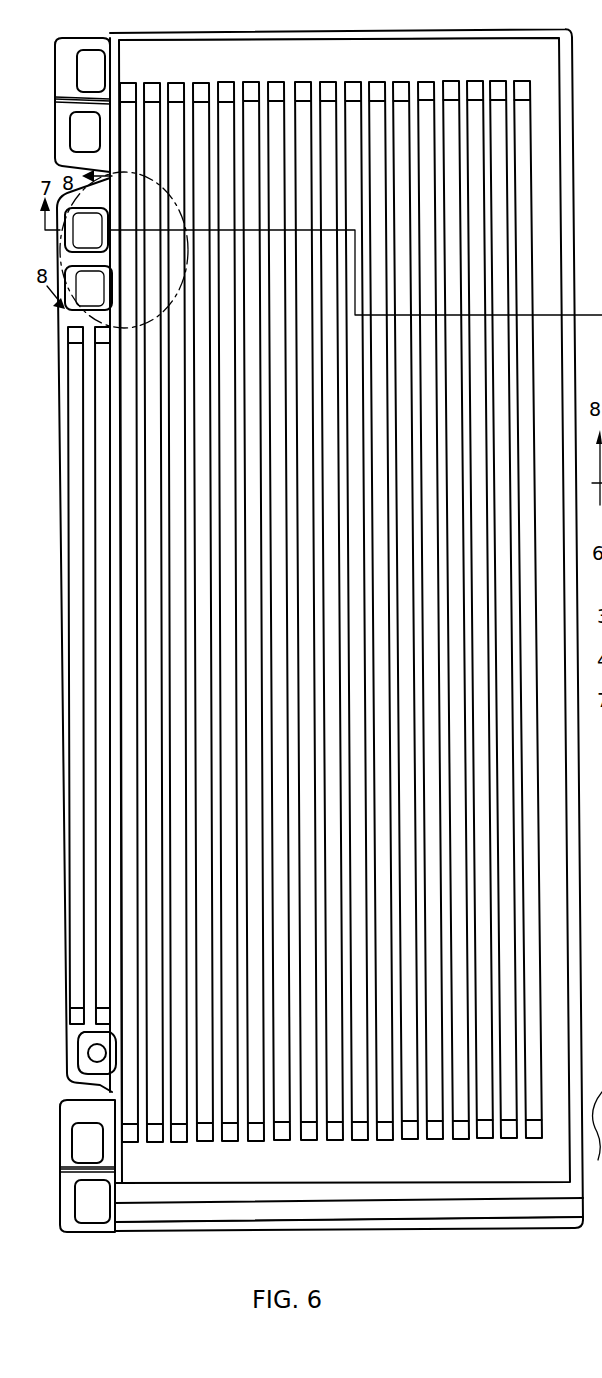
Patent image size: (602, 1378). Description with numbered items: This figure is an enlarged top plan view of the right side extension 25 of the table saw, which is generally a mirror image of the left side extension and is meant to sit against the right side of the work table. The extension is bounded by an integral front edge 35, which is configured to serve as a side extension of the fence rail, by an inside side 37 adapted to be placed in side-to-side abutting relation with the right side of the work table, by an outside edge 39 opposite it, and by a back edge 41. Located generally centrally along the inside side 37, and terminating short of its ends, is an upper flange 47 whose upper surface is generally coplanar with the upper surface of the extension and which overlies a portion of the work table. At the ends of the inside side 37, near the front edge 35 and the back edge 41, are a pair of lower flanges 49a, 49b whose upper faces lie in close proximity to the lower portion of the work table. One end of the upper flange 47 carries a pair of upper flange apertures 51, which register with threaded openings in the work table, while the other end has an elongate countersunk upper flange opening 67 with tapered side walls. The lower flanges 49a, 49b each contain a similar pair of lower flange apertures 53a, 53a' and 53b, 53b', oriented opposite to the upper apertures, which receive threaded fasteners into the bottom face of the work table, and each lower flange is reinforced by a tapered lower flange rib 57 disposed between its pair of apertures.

The right side extension 25 is at (575, 167).
The front edge 35 is at (384, 1242).
The inside side 37 is at (58, 636).
The outside edge 39 is at (597, 226).
The back edge 41 is at (373, 25).
The upper flange 47 is at (62, 1042).
The lower flange 49a is at (65, 1233).
The lower flange 49b is at (60, 38).
The upper flange aperture 51 is at (90, 245).
The lower flange aperture 53a is at (137, 1160).
The lower flange aperture 53a' is at (141, 1218).
The lower flange aperture 53b is at (119, 48).
The lower flange aperture 53b' is at (168, 78).
The lower flange rib 57 is at (90, 100).
The upper flange opening 67 is at (120, 1130).